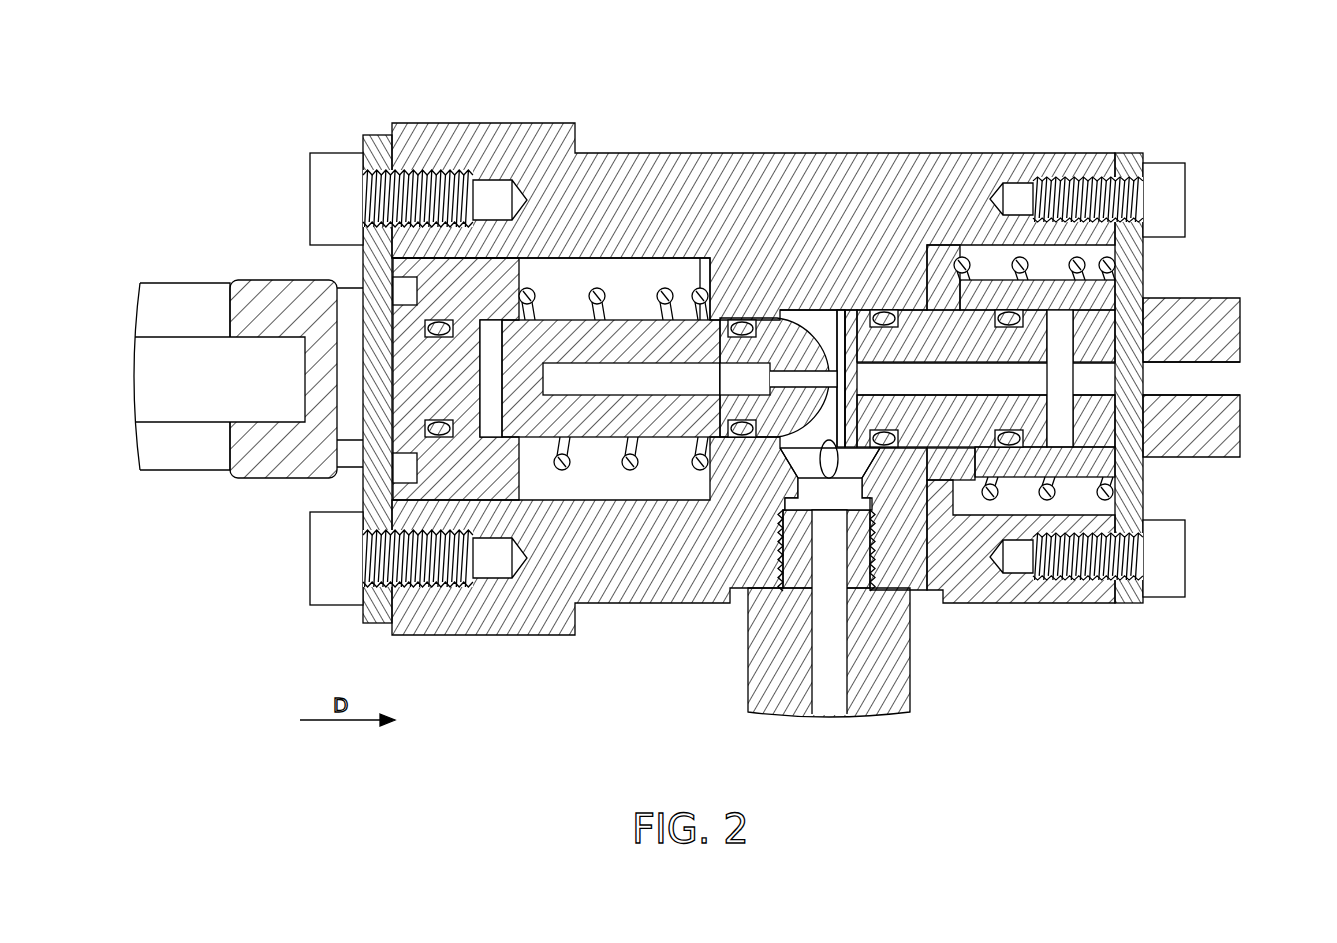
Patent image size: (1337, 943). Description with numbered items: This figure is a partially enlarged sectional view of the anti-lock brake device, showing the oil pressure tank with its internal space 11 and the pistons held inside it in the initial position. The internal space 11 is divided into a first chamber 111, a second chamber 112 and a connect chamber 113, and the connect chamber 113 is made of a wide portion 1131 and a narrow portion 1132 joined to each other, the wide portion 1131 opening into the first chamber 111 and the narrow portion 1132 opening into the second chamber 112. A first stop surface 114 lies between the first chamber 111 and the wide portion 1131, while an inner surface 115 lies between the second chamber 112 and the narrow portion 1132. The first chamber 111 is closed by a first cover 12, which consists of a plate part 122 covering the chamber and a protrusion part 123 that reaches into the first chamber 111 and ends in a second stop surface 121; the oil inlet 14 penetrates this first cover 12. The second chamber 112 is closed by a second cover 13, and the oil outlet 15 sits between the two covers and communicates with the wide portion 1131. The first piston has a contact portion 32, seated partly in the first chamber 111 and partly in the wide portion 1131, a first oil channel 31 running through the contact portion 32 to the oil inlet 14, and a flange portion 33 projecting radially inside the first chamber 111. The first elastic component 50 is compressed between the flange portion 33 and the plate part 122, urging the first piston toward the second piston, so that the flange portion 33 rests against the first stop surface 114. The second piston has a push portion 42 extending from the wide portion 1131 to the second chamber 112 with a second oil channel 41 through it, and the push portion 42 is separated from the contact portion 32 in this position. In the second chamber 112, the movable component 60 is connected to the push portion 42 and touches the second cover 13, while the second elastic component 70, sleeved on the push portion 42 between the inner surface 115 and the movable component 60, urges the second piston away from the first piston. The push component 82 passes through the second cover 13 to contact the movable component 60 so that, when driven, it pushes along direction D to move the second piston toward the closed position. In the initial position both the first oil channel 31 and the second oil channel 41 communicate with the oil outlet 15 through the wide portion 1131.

The internal space 11 is at (1090, 72).
The first chamber 111 is at (1040, 269).
The second chamber 112 is at (615, 287).
The connect chamber 113 is at (920, 118).
The wide portion 1131 is at (838, 325).
The narrow portion 1132 is at (775, 337).
The first stop surface 114 is at (931, 270).
The inner surface 115 is at (706, 273).
The first cover 12 is at (1093, 435).
The second stop surface 121 is at (1021, 566).
The plate part 122 is at (1130, 470).
The protrusion part 123 is at (1075, 478).
The second cover 13 is at (365, 492).
The oil inlet 14 is at (1195, 380).
The oil outlet 15 is at (828, 522).
The first oil channel 31 is at (1044, 379).
The contact portion 32 is at (890, 442).
The flange portion 33 is at (935, 495).
The second oil channel 41 is at (605, 376).
The push portion 42 is at (665, 420).
The first elastic component 50 is at (1082, 253).
The movable component 60 is at (450, 470).
The second elastic component 70 is at (562, 473).
The push component 82 is at (272, 300).